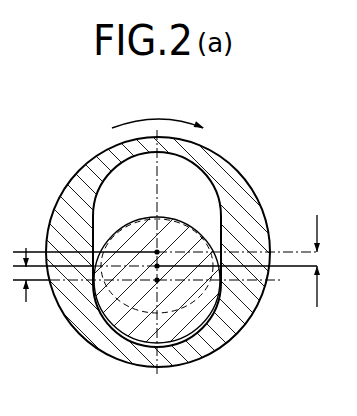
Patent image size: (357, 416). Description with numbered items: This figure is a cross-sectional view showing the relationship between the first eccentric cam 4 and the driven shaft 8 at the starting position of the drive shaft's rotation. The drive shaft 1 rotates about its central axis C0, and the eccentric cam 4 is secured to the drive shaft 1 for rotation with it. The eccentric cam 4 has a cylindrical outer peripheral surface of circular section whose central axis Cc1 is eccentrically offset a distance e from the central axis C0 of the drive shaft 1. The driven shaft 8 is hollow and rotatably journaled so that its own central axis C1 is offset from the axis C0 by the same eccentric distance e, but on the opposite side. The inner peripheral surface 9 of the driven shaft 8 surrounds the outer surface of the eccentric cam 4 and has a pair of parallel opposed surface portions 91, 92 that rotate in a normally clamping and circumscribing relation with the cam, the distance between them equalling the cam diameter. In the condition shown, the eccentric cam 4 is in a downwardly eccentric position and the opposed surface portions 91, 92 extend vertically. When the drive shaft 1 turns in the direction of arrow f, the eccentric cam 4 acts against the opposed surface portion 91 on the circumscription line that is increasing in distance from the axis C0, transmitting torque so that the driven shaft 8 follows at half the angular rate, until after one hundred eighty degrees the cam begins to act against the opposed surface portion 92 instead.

The driven shaft 8 is at (239, 178).
The inner peripheral surface 9 is at (183, 160).
The opposed surface portion 91 is at (98, 222).
The opposed surface portion 92 is at (219, 231).
The eccentric cam 4 is at (131, 229).
The drive shaft 1 is at (197, 301).
The central axis of driven shaft C1 is at (155, 252).
The central axis of drive shaft C0 is at (155, 268).
The central axis of eccentric cam Cc1 is at (155, 282).
The eccentric distance e is at (172, 261).
The rotation direction arrow f is at (130, 123).